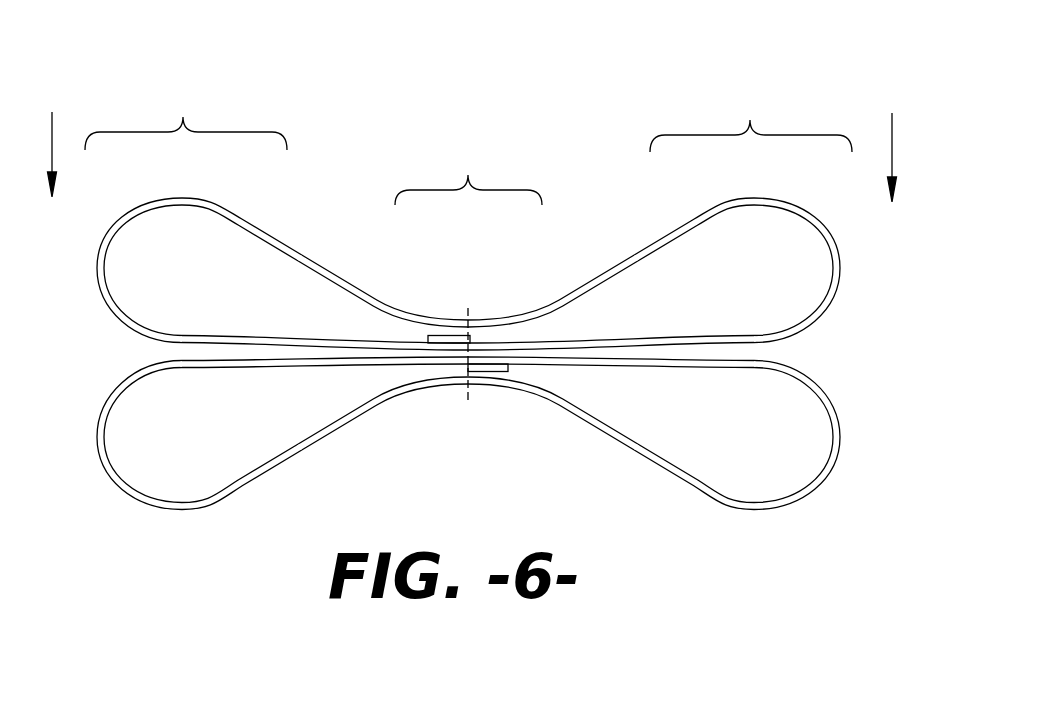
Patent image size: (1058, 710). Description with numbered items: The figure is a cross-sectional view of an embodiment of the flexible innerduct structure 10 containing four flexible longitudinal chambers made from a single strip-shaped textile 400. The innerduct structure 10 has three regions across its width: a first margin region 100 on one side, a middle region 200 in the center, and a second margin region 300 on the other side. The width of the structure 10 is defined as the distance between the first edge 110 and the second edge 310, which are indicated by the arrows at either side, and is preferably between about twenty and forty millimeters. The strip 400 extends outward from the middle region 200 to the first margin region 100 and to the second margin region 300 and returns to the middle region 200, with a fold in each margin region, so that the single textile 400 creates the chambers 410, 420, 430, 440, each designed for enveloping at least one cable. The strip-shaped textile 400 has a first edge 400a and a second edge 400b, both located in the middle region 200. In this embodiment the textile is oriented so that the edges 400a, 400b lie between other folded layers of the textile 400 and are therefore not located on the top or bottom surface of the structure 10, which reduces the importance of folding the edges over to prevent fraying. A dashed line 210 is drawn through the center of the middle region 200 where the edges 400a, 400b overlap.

The innerduct structure 10 is at (313, 103).
The first margin region 100 is at (186, 115).
The first edge 110 is at (52, 136).
The middle region 200 is at (468, 172).
The central axis 210 is at (467, 392).
The second margin region 300 is at (751, 118).
The second edge 310 is at (893, 138).
The strip-shaped textile 400 is at (502, 361).
The first edge 400a is at (428, 338).
The second edge 400b is at (508, 371).
The flexible longitudinal chamber 410 is at (722, 281).
The flexible longitudinal chamber 420 is at (161, 281).
The flexible longitudinal chamber 430 is at (724, 449).
The flexible longitudinal chamber 440 is at (161, 448).